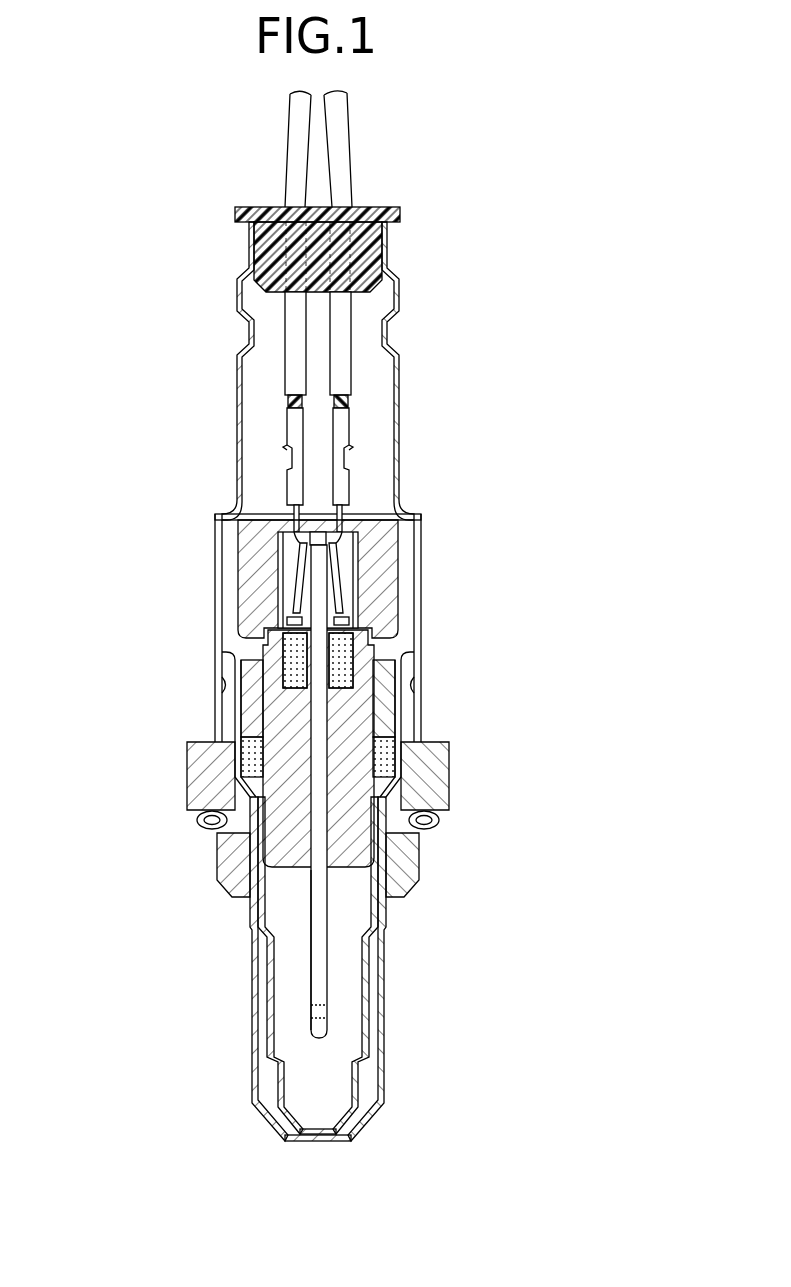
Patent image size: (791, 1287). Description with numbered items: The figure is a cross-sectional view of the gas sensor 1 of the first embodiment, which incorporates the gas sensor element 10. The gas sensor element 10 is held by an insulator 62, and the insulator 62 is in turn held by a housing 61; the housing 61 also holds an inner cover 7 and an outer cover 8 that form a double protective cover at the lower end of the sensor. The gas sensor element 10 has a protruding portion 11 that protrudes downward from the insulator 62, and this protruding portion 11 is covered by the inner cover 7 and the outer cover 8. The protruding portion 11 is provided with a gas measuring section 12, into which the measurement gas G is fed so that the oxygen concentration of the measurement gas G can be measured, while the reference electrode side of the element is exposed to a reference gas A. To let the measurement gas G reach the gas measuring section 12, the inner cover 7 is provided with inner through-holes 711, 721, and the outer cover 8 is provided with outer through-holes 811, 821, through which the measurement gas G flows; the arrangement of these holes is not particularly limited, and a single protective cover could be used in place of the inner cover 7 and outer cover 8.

The gas sensor 1 is at (440, 228).
The reference gas A is at (363, 333).
The housing 61 is at (208, 775).
The insulator 62 is at (355, 795).
The gas sensor element 10 is at (332, 901).
The protruding portion 11 is at (406, 805).
The gas measuring section 12 is at (315, 1010).
The inner cover 7 is at (330, 1012).
The inner through-hole 711 is at (368, 960).
The inner through-hole 721 is at (320, 1142).
The outer cover 8 is at (334, 1012).
The outer through-hole 811 is at (387, 1083).
The outer through-hole 821 is at (338, 1142).
The measurement gas G is at (252, 1080).